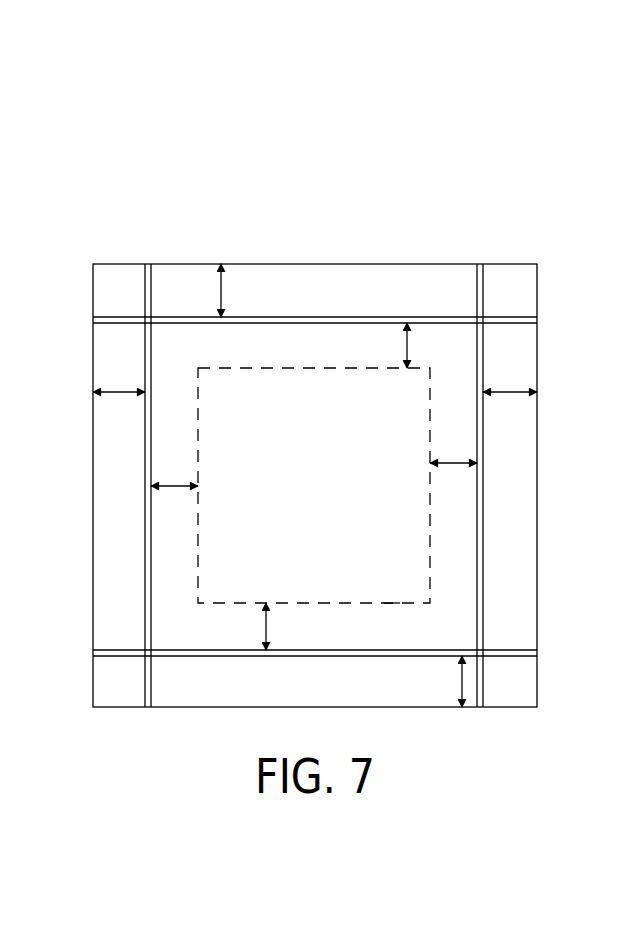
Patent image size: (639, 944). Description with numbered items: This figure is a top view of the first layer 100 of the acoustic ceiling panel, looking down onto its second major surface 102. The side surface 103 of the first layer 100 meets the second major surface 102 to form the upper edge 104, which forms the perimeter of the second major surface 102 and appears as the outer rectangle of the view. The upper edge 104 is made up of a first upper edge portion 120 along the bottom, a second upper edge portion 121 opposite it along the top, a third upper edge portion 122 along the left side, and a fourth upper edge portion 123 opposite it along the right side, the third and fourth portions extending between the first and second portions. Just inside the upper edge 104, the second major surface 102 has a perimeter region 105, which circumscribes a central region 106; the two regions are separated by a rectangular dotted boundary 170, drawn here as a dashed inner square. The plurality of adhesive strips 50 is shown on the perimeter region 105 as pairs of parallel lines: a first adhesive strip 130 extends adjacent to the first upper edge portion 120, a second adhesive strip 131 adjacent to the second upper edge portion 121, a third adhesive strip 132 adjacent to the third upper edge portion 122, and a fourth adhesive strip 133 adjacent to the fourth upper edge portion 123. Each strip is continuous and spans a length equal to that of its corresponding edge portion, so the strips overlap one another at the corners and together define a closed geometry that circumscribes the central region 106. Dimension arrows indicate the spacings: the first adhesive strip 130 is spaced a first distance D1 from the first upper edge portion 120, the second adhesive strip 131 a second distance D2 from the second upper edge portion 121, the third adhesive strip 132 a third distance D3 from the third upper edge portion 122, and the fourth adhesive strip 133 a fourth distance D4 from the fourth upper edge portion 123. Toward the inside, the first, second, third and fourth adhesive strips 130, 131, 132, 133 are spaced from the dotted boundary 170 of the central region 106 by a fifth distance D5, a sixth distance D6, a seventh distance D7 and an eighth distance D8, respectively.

The first layer 100 is at (70, 196).
The second major surface 102 is at (322, 454).
The side surface 103 is at (128, 264).
The upper edge 104 is at (322, 479).
The perimeter region 105 is at (458, 347).
The central region 106 is at (322, 454).
The fold line 50 is at (318, 471).
The first upper edge portion 120 is at (369, 736).
The second upper edge portion 121 is at (236, 229).
The third upper edge portion 122 is at (75, 450).
The fourth upper edge portion 123 is at (561, 314).
The first adhesive strip 130 is at (401, 652).
The second adhesive strip 131 is at (420, 318).
The third adhesive strip 132 is at (145, 628).
The fourth adhesive strip 133 is at (478, 552).
The dotted boundary 170 is at (384, 603).
The first distance D1 is at (465, 680).
The second distance D2 is at (218, 292).
The third distance D3 is at (118, 388).
The fourth distance D4 is at (544, 359).
The fifth distance D5 is at (266, 626).
The sixth distance D6 is at (405, 345).
The seventh distance D7 is at (172, 483).
The eighth distance D8 is at (455, 468).